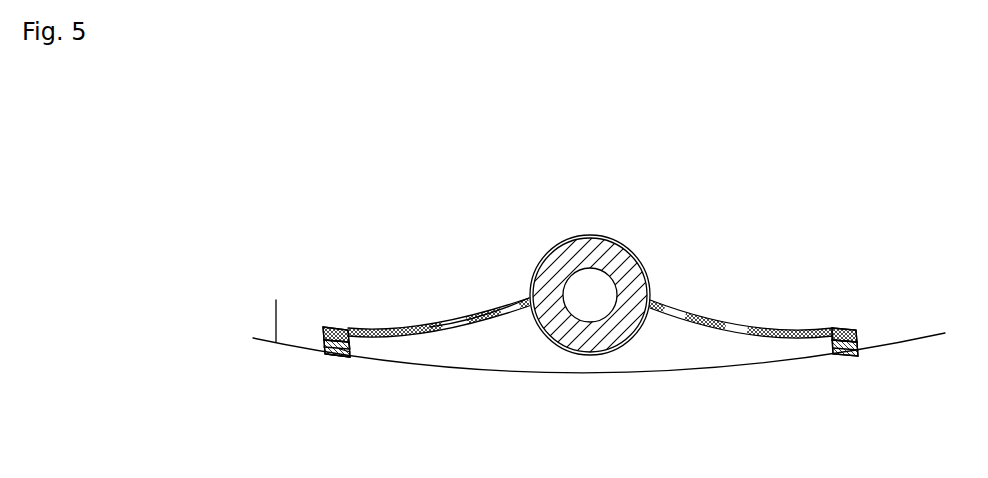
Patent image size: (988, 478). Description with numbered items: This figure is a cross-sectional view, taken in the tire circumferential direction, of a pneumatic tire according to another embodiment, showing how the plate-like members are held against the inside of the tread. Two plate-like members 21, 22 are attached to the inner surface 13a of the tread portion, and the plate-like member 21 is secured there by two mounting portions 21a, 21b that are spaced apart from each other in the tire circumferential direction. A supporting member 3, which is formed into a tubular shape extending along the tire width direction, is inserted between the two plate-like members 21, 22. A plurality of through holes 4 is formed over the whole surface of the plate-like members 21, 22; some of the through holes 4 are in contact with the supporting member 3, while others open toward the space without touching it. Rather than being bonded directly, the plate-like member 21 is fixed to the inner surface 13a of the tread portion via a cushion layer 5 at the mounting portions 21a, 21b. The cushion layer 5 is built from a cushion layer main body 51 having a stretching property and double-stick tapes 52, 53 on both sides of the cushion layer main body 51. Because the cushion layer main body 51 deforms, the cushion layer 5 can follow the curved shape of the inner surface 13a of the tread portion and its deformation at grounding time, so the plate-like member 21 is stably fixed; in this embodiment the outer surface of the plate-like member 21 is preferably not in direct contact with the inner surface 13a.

The supporting member 3 is at (647, 323).
The through holes 4 is at (590, 235).
The cushion layer 5 is at (323, 348).
The inner surface of the tread portion 13a is at (276, 342).
The plate-like member 21 is at (472, 327).
The mounting portion 21a is at (325, 326).
The mounting portion 21b is at (843, 327).
The plate-like member 22 is at (462, 294).
The cushion layer main body 51 is at (350, 353).
The double-stick tape 52 is at (352, 346).
The double-stick tape 53 is at (349, 358).